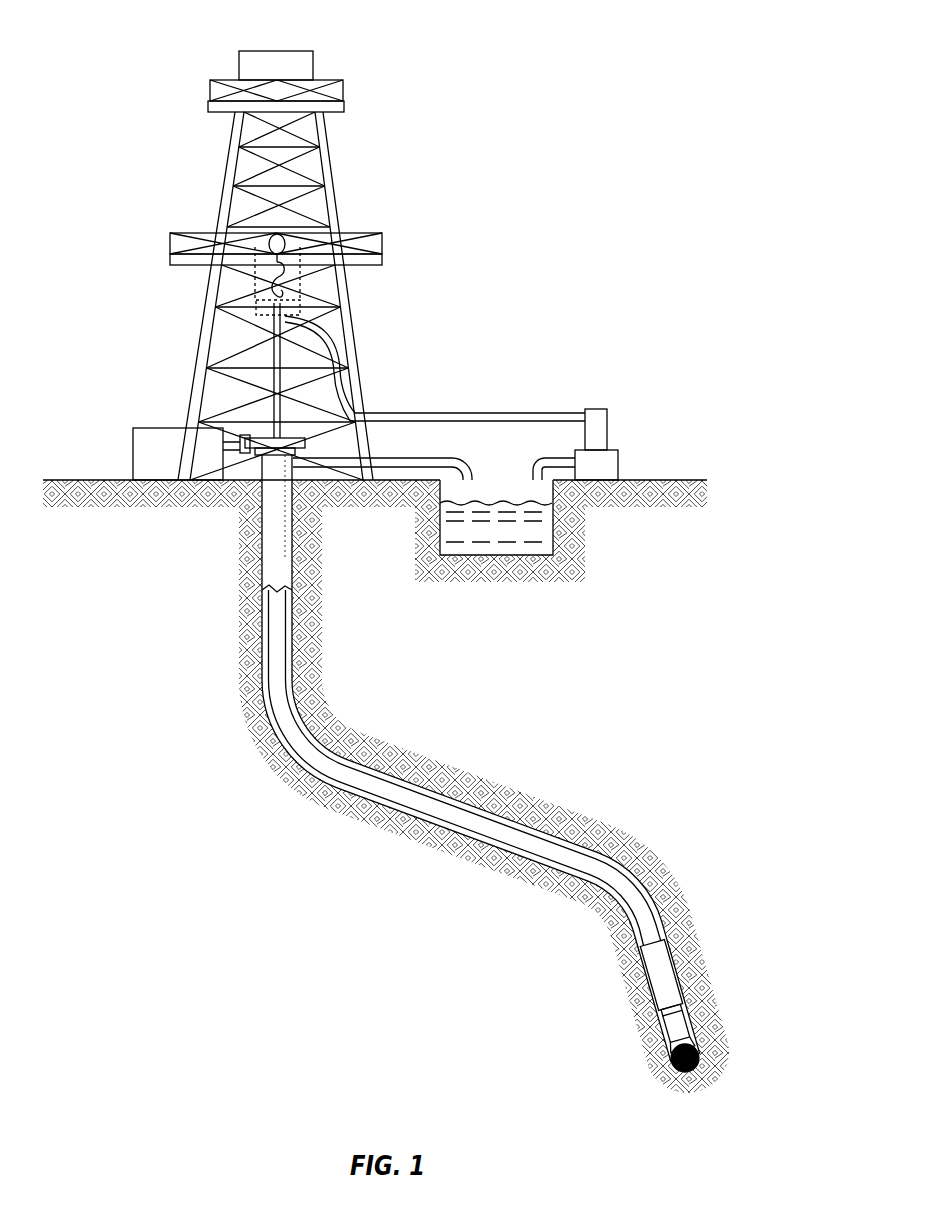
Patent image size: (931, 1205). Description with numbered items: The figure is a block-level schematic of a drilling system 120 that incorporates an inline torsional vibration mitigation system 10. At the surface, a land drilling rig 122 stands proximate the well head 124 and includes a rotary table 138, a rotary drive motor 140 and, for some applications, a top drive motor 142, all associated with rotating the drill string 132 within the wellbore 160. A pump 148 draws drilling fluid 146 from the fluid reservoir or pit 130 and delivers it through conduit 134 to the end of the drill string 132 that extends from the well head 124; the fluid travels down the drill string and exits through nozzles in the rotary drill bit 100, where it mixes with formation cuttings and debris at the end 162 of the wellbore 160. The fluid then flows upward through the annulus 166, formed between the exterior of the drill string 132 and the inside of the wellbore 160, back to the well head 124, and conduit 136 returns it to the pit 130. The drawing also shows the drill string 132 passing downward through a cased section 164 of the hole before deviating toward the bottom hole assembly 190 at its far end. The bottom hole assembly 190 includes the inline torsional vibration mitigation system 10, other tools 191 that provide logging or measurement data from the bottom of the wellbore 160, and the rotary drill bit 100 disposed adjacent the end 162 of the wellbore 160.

The drilling system 120 is at (371, 346).
The land drilling rig 122 is at (220, 184).
The top drive motor 142 is at (265, 283).
The rotary drive motor 140 is at (133, 448).
The rotary table 138 is at (308, 441).
The conduit 134 is at (490, 412).
The conduit 136 is at (430, 458).
The pump 148 is at (607, 430).
The well head 124 is at (246, 464).
The fluid reservoir or pit 130 is at (467, 558).
The drilling fluid 146 is at (521, 556).
The casing 164 is at (262, 570).
The annulus 166 is at (265, 684).
The drill string 132 is at (288, 754).
The wellbore 160 is at (358, 761).
The inline torsional vibration mitigation system 10 is at (670, 953).
The tools 191 is at (657, 1013).
The rotary drill bit 100 is at (700, 1047).
The end of wellbore 162 is at (678, 1070).
The bottom hole assembly 190 is at (708, 1011).